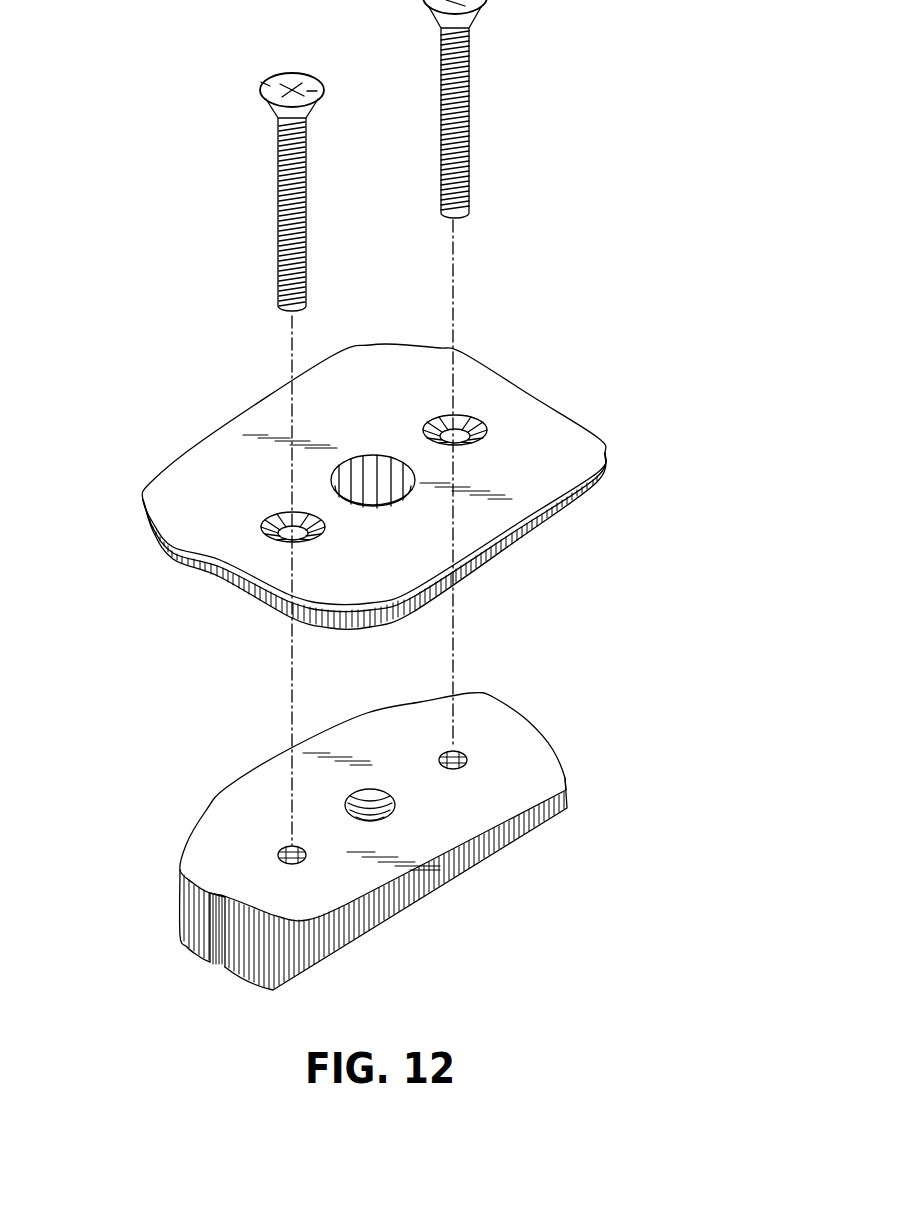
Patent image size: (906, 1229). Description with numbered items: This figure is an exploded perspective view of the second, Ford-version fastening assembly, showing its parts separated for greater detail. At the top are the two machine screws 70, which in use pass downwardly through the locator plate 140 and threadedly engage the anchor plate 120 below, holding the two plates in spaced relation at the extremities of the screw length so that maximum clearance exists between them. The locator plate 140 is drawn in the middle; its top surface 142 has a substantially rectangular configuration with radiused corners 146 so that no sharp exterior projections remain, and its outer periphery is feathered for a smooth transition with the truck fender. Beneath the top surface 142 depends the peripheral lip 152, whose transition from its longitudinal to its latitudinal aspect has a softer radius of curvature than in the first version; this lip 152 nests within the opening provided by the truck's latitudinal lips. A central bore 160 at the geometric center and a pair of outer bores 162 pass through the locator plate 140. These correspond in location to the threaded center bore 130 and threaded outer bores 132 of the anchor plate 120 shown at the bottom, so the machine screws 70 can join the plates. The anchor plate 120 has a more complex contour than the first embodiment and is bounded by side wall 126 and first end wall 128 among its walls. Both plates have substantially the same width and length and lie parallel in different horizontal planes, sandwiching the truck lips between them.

The machine screws 70 is at (278, 216).
The locator plate 140 is at (640, 388).
The radiused corners 146 is at (143, 490).
The top surface 142 is at (401, 556).
The lip 152 is at (333, 625).
The central bore 160 is at (383, 470).
The outer bores 162 is at (273, 515).
The anchor plate 120 is at (623, 738).
The side wall 126 is at (420, 900).
The first end wall 128 is at (190, 915).
The center bore 130 is at (393, 800).
The outer bores 132 is at (460, 755).